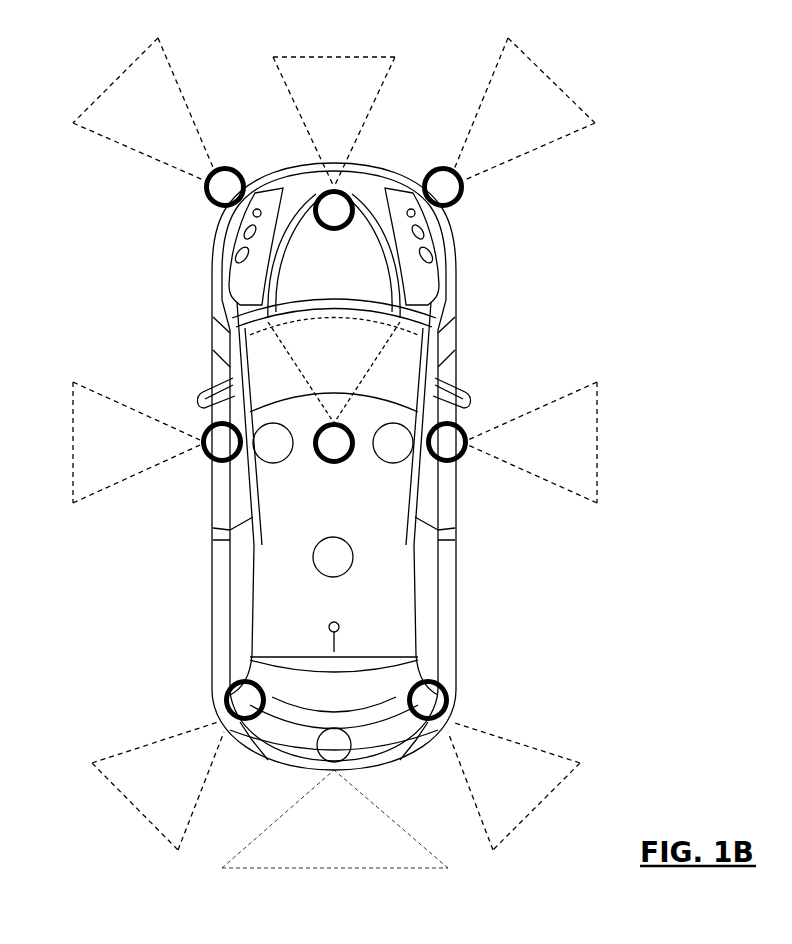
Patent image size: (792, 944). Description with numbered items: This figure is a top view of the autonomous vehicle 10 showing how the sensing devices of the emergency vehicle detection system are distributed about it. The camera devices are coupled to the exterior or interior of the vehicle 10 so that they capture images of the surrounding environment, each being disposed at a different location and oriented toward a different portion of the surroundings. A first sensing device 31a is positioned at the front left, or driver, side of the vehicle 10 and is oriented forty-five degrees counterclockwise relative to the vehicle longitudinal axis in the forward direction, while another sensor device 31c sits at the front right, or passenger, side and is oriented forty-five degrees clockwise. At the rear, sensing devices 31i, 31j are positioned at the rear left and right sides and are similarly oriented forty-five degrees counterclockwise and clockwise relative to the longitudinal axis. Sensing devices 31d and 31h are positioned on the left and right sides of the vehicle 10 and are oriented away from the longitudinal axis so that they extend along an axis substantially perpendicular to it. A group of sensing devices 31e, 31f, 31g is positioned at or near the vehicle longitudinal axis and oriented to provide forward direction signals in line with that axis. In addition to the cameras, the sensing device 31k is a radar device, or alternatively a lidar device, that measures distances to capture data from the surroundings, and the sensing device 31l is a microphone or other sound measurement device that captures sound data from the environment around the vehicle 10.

The vehicle 10 is at (607, 158).
The first sensing device 31a is at (208, 199).
The sensor device 31c is at (460, 198).
The sensing device 31d is at (210, 466).
The sensing device 31e is at (288, 463).
The sensing device 31f is at (336, 464).
The sensing device 31g is at (392, 463).
The sensing device 31h is at (452, 462).
The sensing device 31i is at (218, 703).
The sensing device 31j is at (452, 703).
The radar device 31k is at (334, 745).
The microphone 31l is at (333, 557).